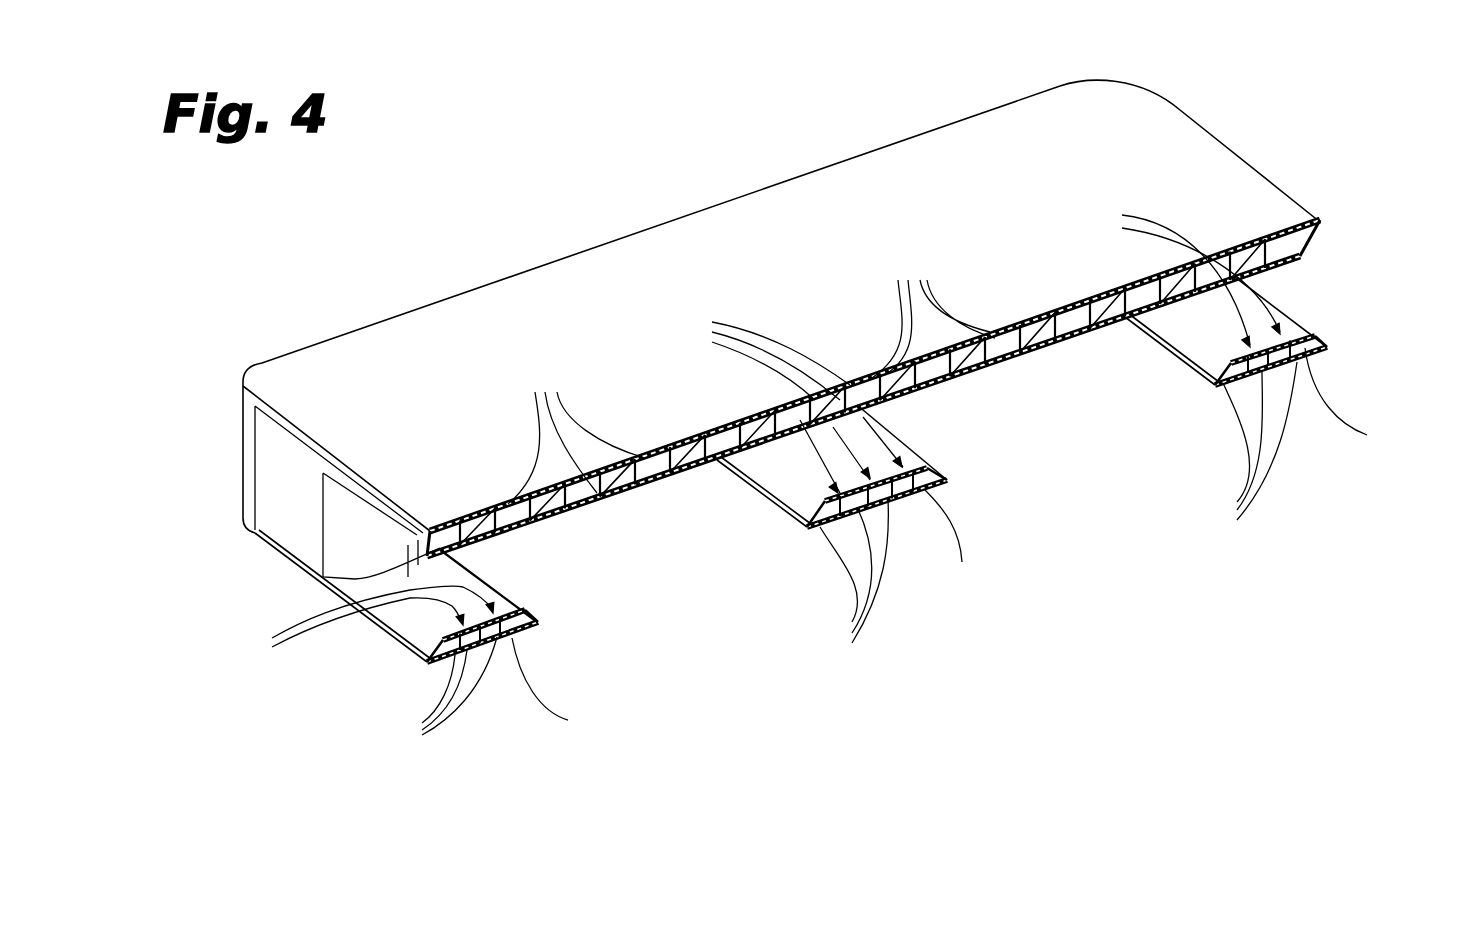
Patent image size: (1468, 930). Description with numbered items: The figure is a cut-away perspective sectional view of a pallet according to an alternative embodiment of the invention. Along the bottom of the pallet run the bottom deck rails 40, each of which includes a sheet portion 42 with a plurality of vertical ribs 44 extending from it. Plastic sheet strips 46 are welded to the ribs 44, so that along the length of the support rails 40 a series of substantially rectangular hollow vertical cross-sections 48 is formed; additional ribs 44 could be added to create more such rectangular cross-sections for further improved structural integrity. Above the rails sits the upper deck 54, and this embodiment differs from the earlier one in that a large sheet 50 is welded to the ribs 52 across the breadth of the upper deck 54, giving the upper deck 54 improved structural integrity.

The bottom deck rails 40 is at (383, 645).
The sheet portion 42 is at (492, 595).
The vertical ribs 44 is at (834, 554).
The plastic sheet strips 46 is at (959, 544).
The substantially rectangular hollow vertical cross-sections 48 is at (751, 438).
The large sheet 50 is at (957, 380).
The ribs 52 is at (751, 379).
The upper deck 54 is at (1186, 156).